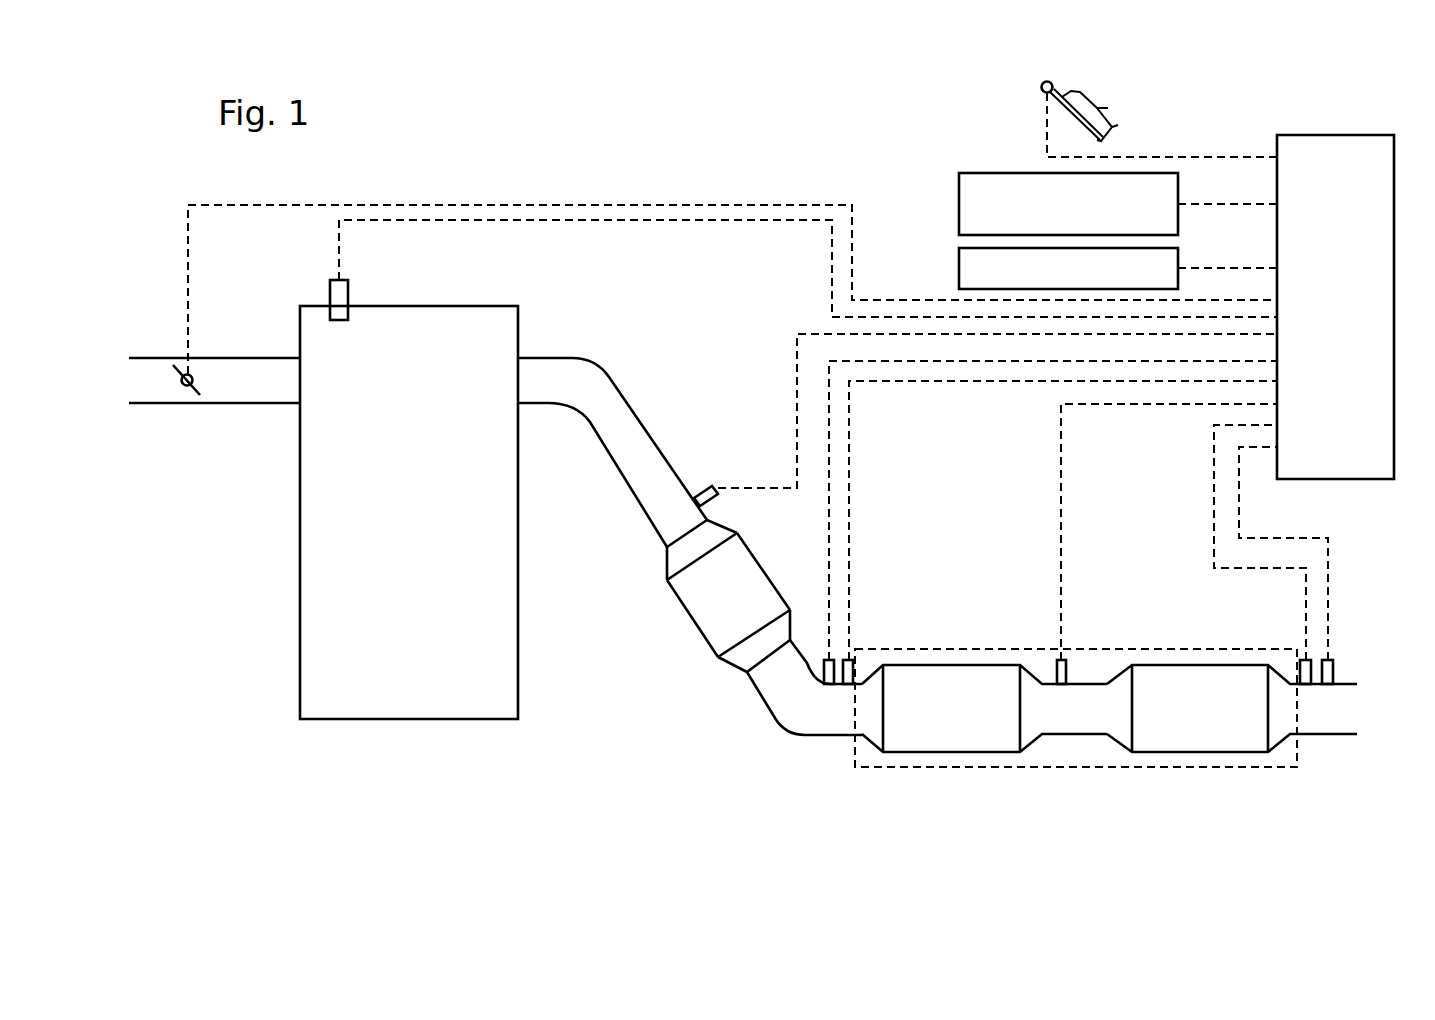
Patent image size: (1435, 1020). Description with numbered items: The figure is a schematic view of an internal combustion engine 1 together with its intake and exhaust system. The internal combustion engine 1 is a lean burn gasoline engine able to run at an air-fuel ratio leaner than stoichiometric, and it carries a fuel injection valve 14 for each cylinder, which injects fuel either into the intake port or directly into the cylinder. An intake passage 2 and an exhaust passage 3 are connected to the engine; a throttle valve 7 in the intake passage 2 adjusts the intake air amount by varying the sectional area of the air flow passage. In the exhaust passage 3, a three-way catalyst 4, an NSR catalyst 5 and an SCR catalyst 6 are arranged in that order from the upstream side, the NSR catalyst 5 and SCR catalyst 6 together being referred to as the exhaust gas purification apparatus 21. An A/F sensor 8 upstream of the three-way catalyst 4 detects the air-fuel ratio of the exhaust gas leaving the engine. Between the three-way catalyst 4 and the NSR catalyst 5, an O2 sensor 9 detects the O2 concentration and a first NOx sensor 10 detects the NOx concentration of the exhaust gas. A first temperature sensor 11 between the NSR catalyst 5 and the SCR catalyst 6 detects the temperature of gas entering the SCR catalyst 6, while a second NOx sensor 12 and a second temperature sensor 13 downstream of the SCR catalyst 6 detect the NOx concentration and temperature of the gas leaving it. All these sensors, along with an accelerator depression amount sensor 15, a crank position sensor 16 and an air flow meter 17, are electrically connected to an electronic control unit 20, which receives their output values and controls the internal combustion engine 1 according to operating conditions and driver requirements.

The internal combustion engine 1 is at (300, 620).
The intake passage 2 is at (235, 404).
The exhaust passage 3 is at (598, 361).
The three-way catalyst 4 is at (692, 625).
The NSR catalyst 5 is at (933, 753).
The SCR catalyst 6 is at (1202, 753).
The throttle valve 7 is at (192, 376).
The A/F sensor 8 is at (722, 500).
The O2 sensor 9 is at (825, 660).
The first NOx sensor 10 is at (847, 658).
The first temperature sensor 11 is at (1062, 658).
The second NOx sensor 12 is at (1304, 660).
The second temperature sensor 13 is at (1336, 660).
The fuel injection valve 14 is at (350, 301).
The accelerator depression amount sensor 15 is at (1043, 84).
The crank position sensor 16 is at (959, 200).
The air flow meter 17 is at (959, 268).
The electronic control unit (ECU) 20 is at (1340, 135).
The exhaust gas purification apparatus 21 is at (1072, 768).